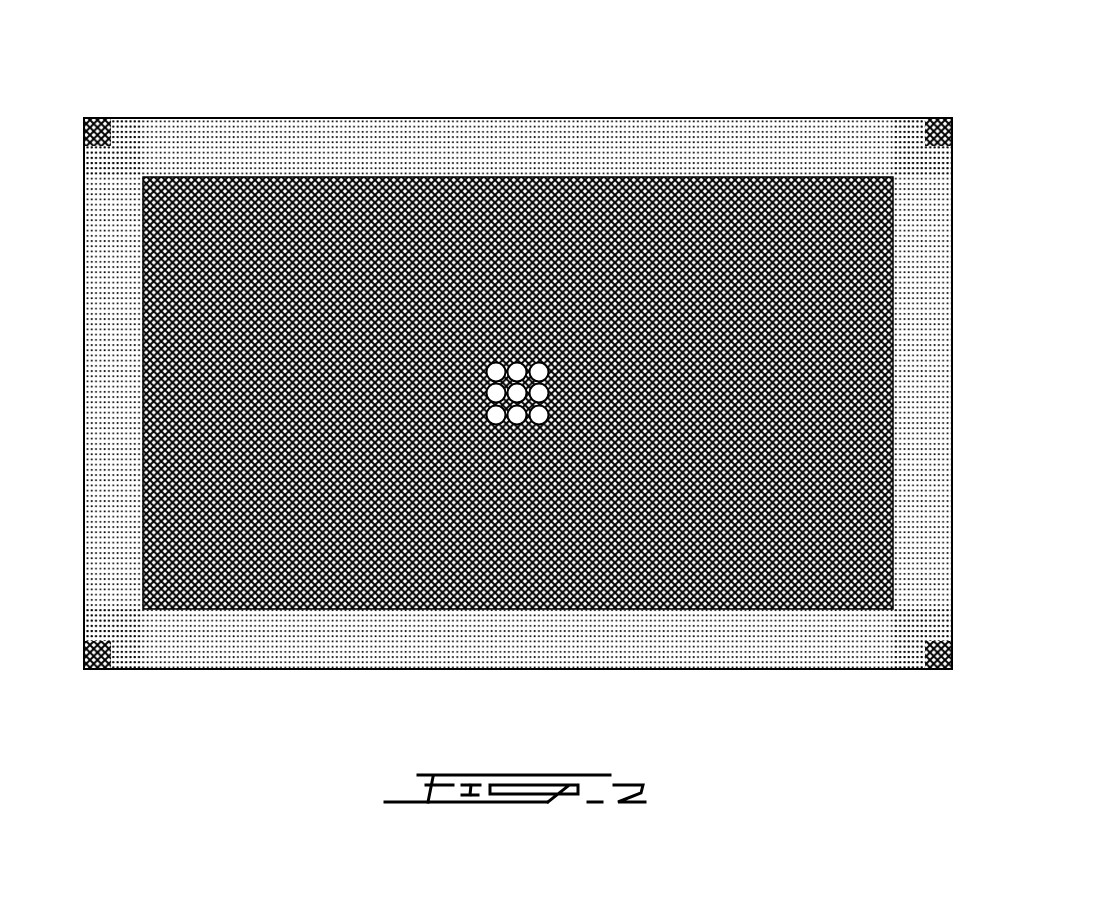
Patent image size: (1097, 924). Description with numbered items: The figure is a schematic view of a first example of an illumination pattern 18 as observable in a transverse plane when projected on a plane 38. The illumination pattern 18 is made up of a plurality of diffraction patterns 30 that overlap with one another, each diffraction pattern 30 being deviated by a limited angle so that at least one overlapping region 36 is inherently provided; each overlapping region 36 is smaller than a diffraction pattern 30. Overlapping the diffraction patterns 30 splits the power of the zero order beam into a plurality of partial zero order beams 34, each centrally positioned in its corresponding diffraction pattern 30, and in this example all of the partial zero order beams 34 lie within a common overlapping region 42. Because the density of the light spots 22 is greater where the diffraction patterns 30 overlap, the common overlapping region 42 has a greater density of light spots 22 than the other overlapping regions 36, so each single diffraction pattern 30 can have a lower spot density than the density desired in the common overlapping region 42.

The illumination pattern 18 is at (588, 401).
The light spots 22 is at (494, 592).
The diffraction patterns 30 is at (163, 205).
The partial zero order beams 34 is at (496, 370).
The overlapping region 36 is at (818, 208).
The plane 38 is at (952, 232).
The common overlapping region 42 is at (669, 222).